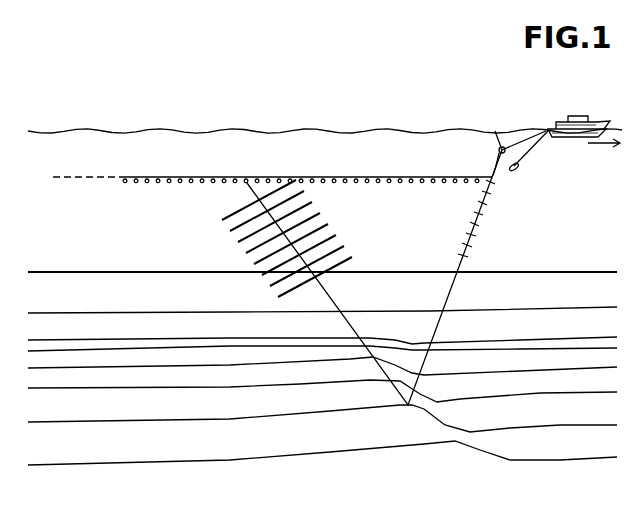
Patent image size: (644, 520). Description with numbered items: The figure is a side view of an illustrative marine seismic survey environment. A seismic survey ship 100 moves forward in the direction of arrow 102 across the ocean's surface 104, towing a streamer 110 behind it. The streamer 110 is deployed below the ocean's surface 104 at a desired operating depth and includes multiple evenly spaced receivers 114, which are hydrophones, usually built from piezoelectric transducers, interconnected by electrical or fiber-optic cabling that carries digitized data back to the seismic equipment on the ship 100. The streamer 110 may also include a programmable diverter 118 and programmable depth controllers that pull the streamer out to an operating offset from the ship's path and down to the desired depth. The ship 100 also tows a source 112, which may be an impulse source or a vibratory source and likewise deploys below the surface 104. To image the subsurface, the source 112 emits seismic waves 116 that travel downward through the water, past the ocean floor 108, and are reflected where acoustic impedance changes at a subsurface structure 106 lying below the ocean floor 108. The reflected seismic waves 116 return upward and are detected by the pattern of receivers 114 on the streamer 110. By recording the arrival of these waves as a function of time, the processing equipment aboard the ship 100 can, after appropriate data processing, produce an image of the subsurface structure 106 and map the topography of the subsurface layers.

The seismic survey ship 100 is at (566, 120).
The arrow 102 is at (608, 155).
The ocean's surface 104 is at (348, 133).
The subsurface structure 106 is at (420, 409).
The ocean floor 108 is at (560, 272).
The streamer 110 is at (528, 158).
The source 112 is at (498, 128).
The receivers 114 is at (148, 181).
The seismic waves 116 is at (467, 243).
The programmable diverter 118 is at (517, 172).